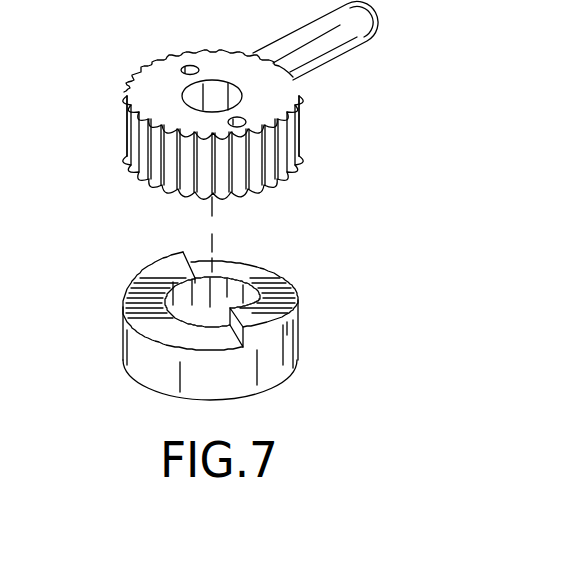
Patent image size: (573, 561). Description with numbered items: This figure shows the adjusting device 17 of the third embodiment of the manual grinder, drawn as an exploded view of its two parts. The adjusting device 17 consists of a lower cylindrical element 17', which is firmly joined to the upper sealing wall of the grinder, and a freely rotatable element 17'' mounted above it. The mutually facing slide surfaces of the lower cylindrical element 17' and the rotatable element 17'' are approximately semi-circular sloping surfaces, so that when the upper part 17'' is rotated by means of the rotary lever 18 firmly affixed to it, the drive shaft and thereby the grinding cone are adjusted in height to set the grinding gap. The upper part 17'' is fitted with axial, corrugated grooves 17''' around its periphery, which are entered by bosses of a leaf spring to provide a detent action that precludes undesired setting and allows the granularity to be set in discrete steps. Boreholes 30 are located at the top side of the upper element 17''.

The adjusting device 17 is at (276, 202).
The lower cylindrical element 17' is at (273, 326).
The freely rotatable element 17'' is at (270, 121).
The axial corrugated grooves 17''' is at (176, 196).
The rotary lever 18 is at (335, 38).
The boreholes 30 is at (182, 68).